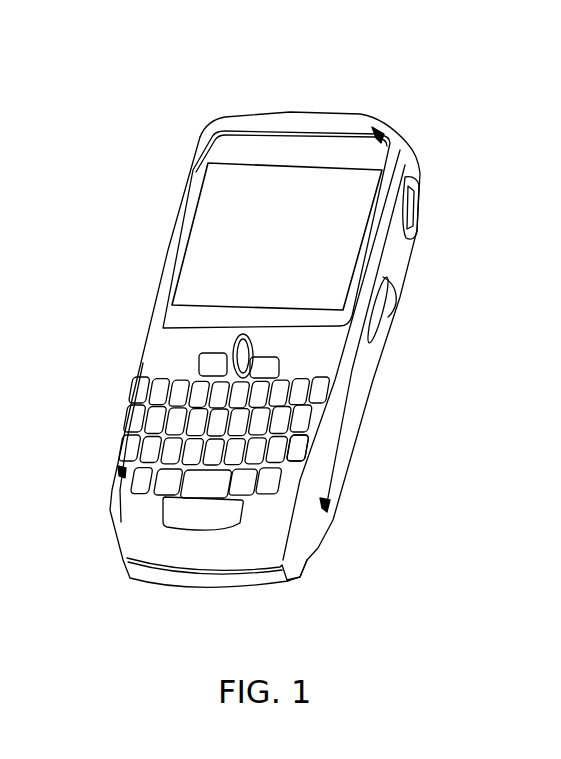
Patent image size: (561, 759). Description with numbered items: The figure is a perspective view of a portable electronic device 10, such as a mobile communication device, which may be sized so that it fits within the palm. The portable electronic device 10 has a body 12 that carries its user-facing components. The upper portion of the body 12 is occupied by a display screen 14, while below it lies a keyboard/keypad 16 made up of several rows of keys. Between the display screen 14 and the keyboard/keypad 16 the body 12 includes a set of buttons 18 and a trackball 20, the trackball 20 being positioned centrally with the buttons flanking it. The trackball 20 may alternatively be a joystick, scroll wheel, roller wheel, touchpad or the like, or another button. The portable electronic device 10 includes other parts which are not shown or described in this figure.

The portable electronic device 10 is at (398, 63).
The body 12 is at (408, 158).
The display screen 14 is at (303, 237).
The keyboard/keypad 16 is at (282, 458).
The set of buttons 18 is at (198, 365).
The trackball 20 is at (248, 350).